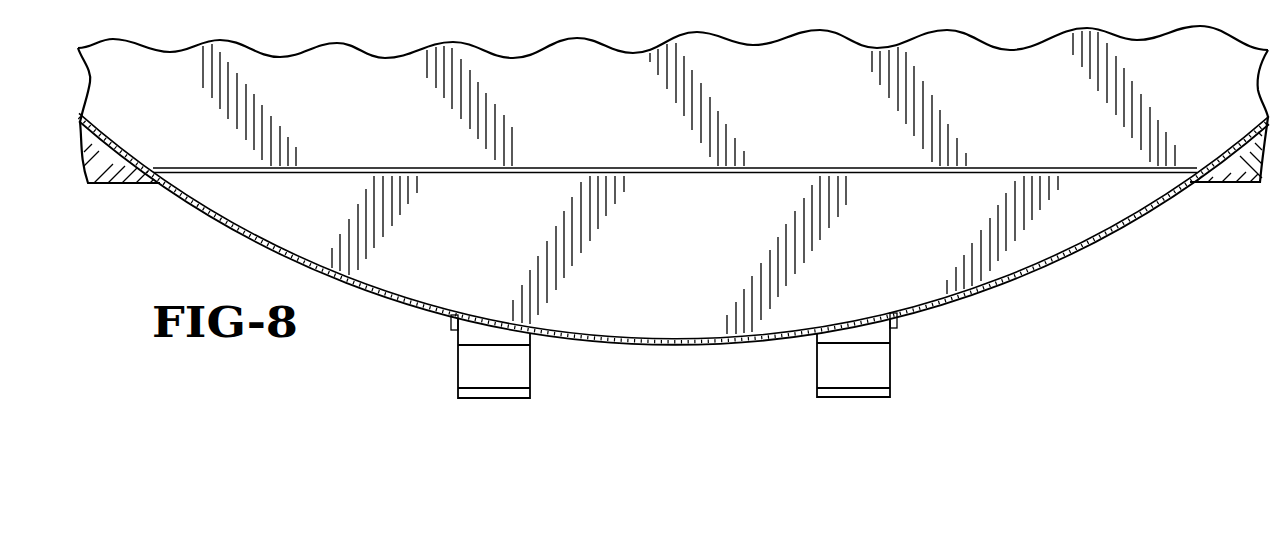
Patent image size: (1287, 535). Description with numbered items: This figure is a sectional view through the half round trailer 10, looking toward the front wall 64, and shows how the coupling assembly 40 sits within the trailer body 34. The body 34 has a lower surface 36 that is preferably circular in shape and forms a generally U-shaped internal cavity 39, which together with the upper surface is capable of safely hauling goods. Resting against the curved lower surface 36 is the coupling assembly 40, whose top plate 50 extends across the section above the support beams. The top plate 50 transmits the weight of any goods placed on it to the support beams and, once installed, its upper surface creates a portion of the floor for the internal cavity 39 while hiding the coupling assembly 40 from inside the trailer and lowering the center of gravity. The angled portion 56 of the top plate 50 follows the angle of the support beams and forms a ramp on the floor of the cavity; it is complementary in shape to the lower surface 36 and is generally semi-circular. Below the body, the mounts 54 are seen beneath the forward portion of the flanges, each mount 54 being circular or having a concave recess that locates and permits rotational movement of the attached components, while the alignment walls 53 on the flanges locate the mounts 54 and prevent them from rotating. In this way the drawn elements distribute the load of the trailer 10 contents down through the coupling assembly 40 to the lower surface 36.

The trailer 10 is at (1186, 222).
The body 34 is at (1110, 243).
The lower surface 36 is at (1065, 256).
The internal cavity 39 is at (745, 80).
The coupling assembly 40 is at (608, 160).
The top plate 50 is at (551, 167).
The alignment walls 53 is at (452, 317).
The mounts 54 is at (470, 372).
The angled portion 56 is at (656, 222).
The front wall 64 is at (392, 87).